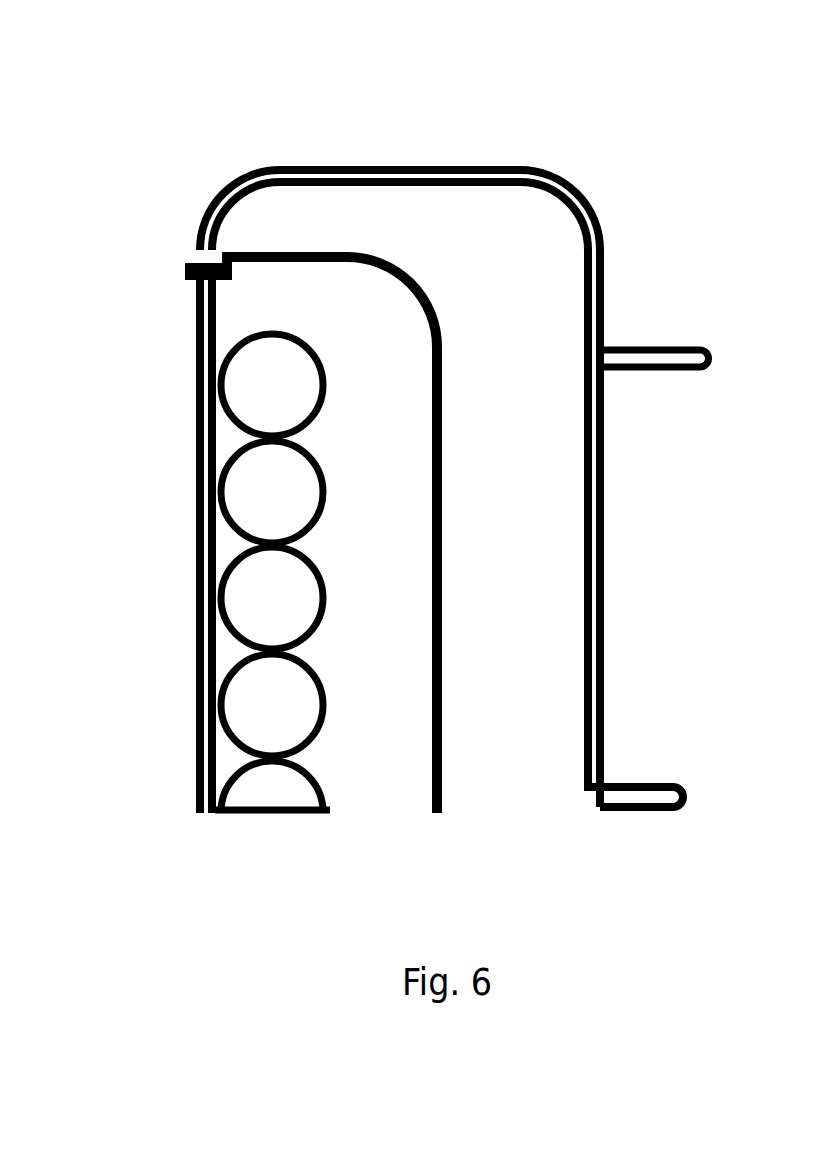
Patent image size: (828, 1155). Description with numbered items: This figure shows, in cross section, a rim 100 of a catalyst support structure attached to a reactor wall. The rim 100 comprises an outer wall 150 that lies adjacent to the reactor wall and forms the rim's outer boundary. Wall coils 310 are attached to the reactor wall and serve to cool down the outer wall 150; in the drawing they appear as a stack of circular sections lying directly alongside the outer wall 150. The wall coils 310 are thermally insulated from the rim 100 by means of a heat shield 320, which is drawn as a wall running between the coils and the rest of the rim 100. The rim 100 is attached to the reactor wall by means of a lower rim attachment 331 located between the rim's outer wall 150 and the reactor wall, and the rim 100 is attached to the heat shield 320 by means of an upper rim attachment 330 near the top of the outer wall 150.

The rim 100 is at (440, 161).
The outer wall 150 is at (215, 738).
The reactor wall coils 310 is at (268, 603).
The heat shield 320 is at (445, 633).
The upper rim attachment 330 is at (187, 263).
The lower rim attachment 331 is at (207, 805).